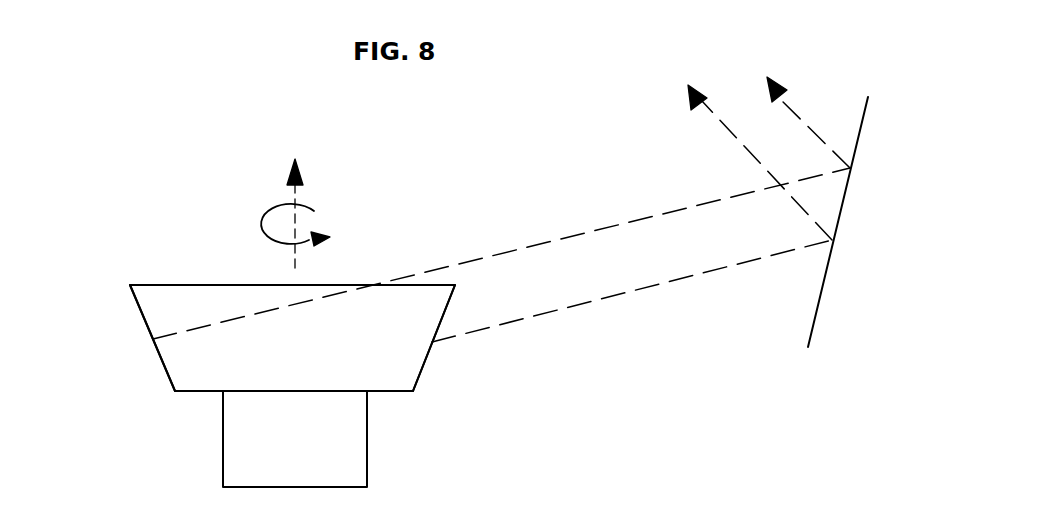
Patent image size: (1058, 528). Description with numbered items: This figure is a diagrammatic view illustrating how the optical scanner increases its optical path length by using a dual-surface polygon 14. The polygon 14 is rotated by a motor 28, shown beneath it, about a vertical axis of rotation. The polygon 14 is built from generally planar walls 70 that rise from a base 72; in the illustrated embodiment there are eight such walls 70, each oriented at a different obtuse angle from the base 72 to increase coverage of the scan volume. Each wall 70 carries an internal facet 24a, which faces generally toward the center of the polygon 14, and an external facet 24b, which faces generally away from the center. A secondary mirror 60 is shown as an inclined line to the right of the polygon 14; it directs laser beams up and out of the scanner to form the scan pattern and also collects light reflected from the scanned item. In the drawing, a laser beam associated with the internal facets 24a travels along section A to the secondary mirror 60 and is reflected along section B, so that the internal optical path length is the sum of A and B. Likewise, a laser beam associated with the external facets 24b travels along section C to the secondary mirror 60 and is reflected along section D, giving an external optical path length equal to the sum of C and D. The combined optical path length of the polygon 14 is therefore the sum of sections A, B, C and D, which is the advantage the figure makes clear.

The dual-surface polygon 14 is at (122, 278).
The internal facets 24a is at (145, 318).
The external facets 24b is at (448, 306).
The motor 28 is at (350, 456).
The secondary mirror 60 is at (862, 124).
The walls 70 is at (164, 371).
The base 72 is at (300, 391).
The laser beam section A is at (602, 230).
The laser beam section B is at (792, 107).
The laser beam section C is at (626, 293).
The laser beam section D is at (729, 130).